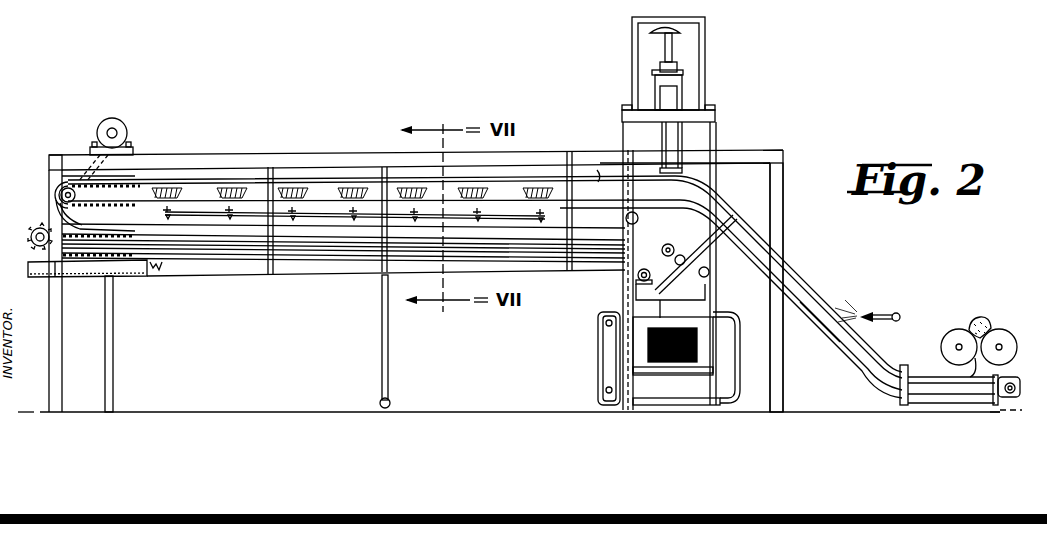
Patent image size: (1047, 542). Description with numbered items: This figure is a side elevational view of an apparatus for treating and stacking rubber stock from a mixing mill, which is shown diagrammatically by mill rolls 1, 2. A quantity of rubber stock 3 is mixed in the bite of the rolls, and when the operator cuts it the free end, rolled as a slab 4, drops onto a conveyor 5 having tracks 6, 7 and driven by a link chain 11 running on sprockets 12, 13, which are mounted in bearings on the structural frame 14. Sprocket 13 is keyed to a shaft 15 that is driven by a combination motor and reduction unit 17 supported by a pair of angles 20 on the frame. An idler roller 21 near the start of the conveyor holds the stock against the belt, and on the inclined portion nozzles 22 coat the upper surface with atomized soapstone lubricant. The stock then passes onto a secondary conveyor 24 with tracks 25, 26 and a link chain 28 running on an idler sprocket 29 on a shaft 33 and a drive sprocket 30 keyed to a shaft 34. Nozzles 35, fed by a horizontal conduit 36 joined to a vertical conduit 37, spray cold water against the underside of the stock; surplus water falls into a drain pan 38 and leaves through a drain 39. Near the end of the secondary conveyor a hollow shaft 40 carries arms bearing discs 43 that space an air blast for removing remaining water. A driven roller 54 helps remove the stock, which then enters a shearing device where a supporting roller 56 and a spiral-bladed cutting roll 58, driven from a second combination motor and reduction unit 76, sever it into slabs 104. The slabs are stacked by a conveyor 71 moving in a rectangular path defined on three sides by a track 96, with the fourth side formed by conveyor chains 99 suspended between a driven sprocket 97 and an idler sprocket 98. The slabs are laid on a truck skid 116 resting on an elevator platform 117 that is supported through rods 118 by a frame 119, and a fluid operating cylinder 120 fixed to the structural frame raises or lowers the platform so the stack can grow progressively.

The mill roll 1 is at (950, 340).
The mill roll 2 is at (1012, 342).
The rubber stock 3 is at (979, 318).
The slab 4 is at (928, 375).
The conveyor 5 is at (1022, 374).
The track 6 is at (812, 318).
The track 7 is at (806, 290).
The link chain 11 is at (126, 180).
The sprocket 12 is at (1022, 393).
The sprocket 13 is at (60, 190).
The structural frame 14 is at (780, 185).
The shaft 15 is at (70, 182).
The combination motor and reduction unit 17 is at (116, 118).
The angles 20 is at (125, 170).
The idler roller 21 is at (906, 365).
The nozzles 22 is at (874, 312).
The secondary conveyor 24 is at (29, 222).
The track 25 is at (222, 244).
The track 26 is at (197, 255).
The link chain 28 is at (60, 268).
The idler sprocket 29 is at (44, 252).
The drive sprocket 30 is at (668, 244).
The shaft 33 is at (33, 238).
The shaft 34 is at (681, 255).
The nozzles 35 is at (232, 213).
The horizontal conduit 36 is at (318, 214).
The vertical conduit 37 is at (382, 335).
The drain pan 38 is at (158, 272).
The drain 39 is at (113, 365).
The hollow shaft 40 is at (636, 216).
The discs 43 is at (600, 172).
The driven roller 54 is at (700, 263).
The supporting roller 56 is at (660, 282).
The cutting roll 58 is at (709, 272).
The conveyor 71 is at (588, 315).
The combination motor and reduction unit 76 is at (638, 274).
The track 96 is at (736, 332).
The sprocket 97 is at (608, 326).
The idler sprocket 98 is at (606, 389).
The conveyor chains 99 is at (598, 370).
The slabs 104 is at (652, 326).
The truck skid 116 is at (657, 378).
The elevator platform 117 is at (690, 376).
The rods 118 is at (715, 143).
The frame 119 is at (703, 60).
The fluid operating cylinder 120 is at (648, 105).